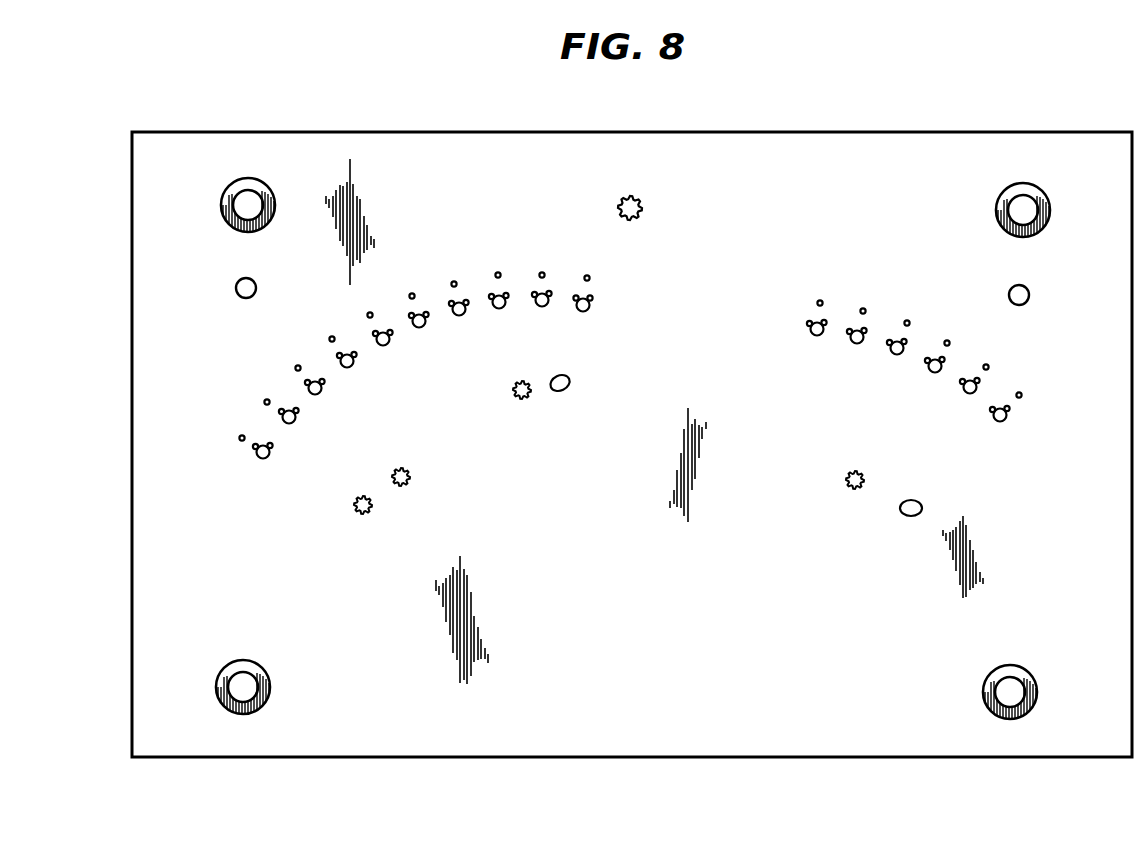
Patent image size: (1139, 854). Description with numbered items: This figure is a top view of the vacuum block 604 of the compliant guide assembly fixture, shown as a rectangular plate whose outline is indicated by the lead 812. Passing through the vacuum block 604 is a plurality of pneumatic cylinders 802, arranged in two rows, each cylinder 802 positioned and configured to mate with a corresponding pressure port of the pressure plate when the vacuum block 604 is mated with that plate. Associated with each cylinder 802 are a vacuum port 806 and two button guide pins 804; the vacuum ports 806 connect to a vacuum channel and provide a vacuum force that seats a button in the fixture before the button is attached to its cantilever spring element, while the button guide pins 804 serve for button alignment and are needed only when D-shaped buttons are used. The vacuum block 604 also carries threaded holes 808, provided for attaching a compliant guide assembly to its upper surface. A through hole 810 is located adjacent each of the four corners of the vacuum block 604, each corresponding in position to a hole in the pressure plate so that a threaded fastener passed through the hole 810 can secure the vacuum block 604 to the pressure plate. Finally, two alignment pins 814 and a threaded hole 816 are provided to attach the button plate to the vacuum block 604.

The vacuum block 604 is at (132, 343).
The pneumatic cylinder 802 is at (586, 312).
The button guide pin 804 is at (576, 295).
The vacuum port 806 is at (589, 277).
The threaded hole 808 is at (363, 497).
The through hole 810 is at (232, 660).
The panel outline 812 is at (1001, 128).
The alignment pin 814 is at (239, 279).
The threaded hole 816 is at (643, 204).